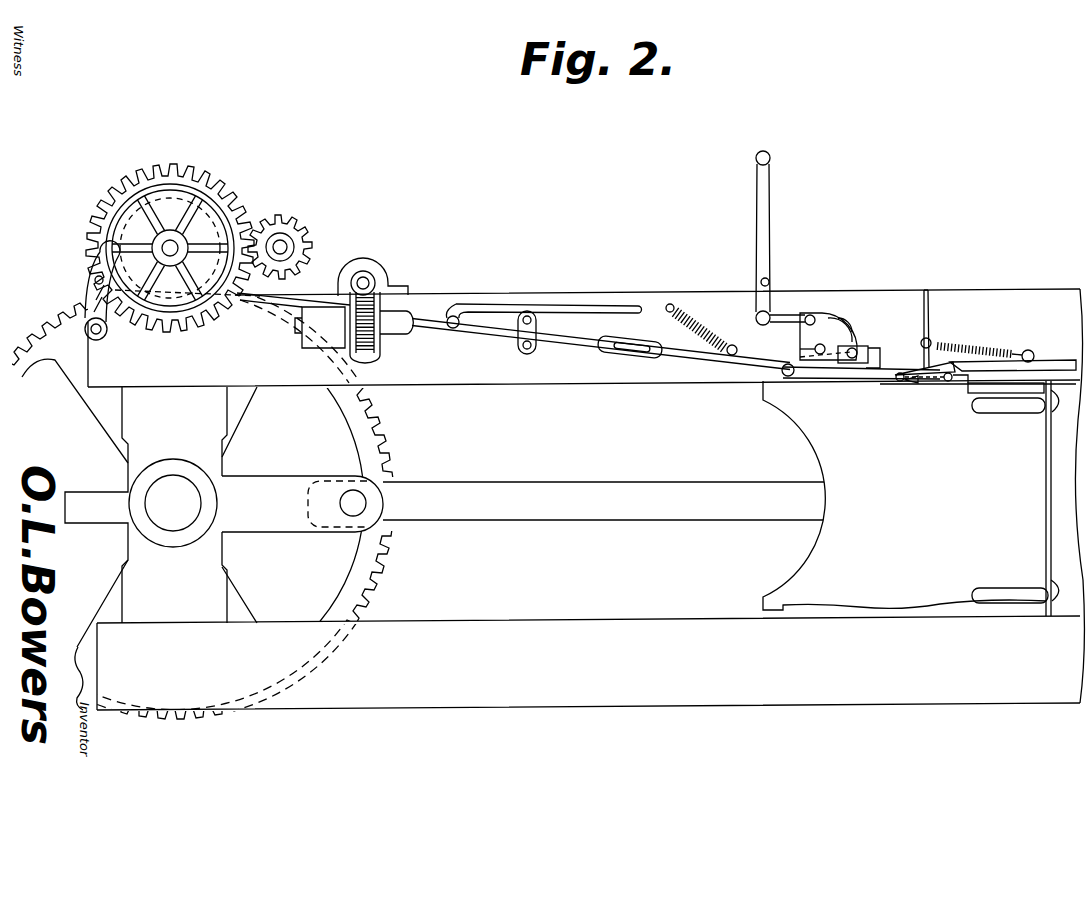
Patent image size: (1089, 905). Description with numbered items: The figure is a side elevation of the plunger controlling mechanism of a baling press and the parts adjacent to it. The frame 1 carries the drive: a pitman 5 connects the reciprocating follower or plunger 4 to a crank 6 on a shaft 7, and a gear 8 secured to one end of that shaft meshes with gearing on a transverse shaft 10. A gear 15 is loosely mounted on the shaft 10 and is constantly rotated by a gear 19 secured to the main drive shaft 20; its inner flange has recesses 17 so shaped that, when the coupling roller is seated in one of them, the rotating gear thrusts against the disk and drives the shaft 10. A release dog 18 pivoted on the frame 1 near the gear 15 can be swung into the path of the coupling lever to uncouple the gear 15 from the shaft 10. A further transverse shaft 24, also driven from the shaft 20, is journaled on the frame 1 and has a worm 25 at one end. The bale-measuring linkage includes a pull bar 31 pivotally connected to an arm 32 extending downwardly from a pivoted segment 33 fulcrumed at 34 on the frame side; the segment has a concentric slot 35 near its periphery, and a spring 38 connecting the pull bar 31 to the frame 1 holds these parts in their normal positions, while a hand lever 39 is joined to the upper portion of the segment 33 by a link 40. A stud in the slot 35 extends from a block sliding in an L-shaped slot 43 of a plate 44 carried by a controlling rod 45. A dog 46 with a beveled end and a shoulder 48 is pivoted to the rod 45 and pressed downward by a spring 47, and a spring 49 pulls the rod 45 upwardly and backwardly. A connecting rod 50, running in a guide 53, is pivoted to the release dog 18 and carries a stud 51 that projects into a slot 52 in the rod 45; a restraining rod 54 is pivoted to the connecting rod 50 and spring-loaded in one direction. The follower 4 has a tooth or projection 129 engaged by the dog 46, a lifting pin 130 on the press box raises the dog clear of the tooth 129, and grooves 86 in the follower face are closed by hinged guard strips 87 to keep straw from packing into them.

The frame 1 is at (614, 295).
The follower or plunger 4 is at (922, 494).
The pitman 5 is at (614, 481).
The crank 6 is at (298, 478).
The shaft 7 is at (190, 495).
The gear 8 is at (393, 440).
The transverse shaft 10 is at (172, 249).
The gear 15 is at (126, 197).
The recesses 17 is at (108, 246).
The release dog 18 is at (94, 262).
The gear 19 is at (282, 213).
The main drive shaft 20 is at (284, 246).
The transverse shaft 24 is at (370, 282).
The worm 25 is at (394, 290).
The pull bar 31 is at (1040, 362).
The arm 32 is at (805, 380).
The pivoted segment 33 is at (846, 322).
The fulcrum 34 is at (814, 348).
The concentric slot 35 is at (826, 320).
The spring 38 is at (990, 348).
The hand lever 39 is at (766, 250).
The link 40 is at (780, 310).
The L-shaped slot 43 is at (860, 350).
The plate 44 is at (891, 356).
The controlling rod 45 is at (755, 364).
The dog 46 is at (933, 358).
The spring 47 is at (926, 289).
The shoulder 48 is at (922, 378).
The spring 49 is at (693, 311).
The connecting rod 50 is at (574, 339).
The stud 51 is at (616, 355).
The slot 52 is at (640, 343).
The guide 53 is at (519, 336).
The restraining rod 54 is at (521, 305).
The grooves 86 is at (1010, 413).
The hinged guard strips 87 is at (1052, 418).
The tooth or projection 129 is at (912, 384).
The lifting pin 130 is at (955, 384).